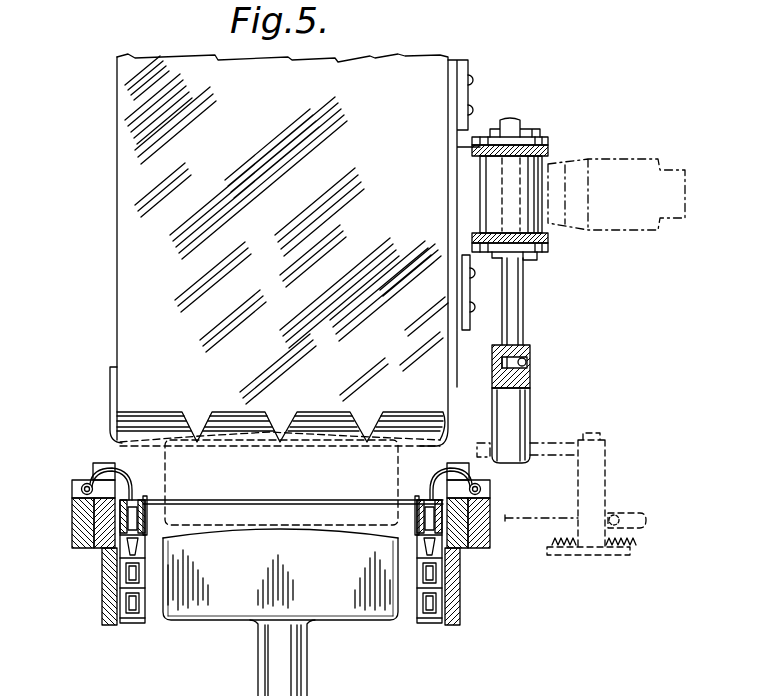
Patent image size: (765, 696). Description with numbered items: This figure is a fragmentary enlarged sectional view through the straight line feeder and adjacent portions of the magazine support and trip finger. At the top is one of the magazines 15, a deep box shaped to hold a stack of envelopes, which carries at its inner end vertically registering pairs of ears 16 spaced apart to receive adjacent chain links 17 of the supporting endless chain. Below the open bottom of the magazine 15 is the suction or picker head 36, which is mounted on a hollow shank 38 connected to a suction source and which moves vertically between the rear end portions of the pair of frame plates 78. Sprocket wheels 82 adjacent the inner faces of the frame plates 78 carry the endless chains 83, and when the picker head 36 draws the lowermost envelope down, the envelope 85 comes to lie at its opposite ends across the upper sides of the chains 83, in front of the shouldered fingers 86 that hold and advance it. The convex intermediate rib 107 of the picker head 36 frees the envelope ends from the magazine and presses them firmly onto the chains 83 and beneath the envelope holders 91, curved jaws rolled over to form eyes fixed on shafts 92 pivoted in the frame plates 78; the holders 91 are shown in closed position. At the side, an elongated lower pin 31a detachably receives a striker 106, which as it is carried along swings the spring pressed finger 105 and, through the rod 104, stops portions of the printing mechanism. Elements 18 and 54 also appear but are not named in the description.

The magazine 15 is at (117, 240).
The ears 16 is at (548, 140).
The chain links 17 is at (552, 152).
The shaft 18 is at (628, 168).
The lower pins 31a is at (526, 303).
The suction or picker head 36 is at (220, 530).
The hollow shank 38 is at (300, 683).
The serrated edge 54 is at (283, 412).
The frame plates 78 is at (108, 598).
The sprocket wheels 82 is at (139, 626).
The endless chain 83 is at (120, 520).
The envelopes 85 is at (333, 499).
The abutments or fingers 86 is at (148, 513).
The envelope holders 91 is at (132, 487).
The shafts 92 is at (81, 490).
The rod 104 is at (539, 518).
The spring pressed finger 105 is at (540, 445).
The strikers 106 is at (532, 396).
The intermediate rib 107 is at (323, 538).